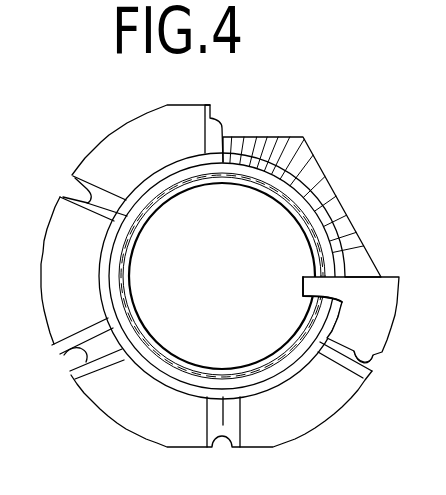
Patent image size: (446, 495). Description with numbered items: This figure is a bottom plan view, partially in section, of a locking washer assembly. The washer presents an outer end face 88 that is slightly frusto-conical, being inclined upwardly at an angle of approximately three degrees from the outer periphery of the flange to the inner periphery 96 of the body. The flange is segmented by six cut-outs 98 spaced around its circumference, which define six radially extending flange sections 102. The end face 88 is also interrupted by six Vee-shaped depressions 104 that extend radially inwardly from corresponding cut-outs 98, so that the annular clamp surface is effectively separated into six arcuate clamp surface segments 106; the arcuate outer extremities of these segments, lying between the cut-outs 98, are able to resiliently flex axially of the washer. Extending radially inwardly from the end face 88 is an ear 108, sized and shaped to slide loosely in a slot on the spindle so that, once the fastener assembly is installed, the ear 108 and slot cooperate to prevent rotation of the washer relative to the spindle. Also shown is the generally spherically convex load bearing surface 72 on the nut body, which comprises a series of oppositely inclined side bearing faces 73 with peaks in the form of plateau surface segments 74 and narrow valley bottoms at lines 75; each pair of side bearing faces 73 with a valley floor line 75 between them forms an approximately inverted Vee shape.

The load bearing surface 72 is at (323, 187).
The side bearing faces 73 is at (276, 147).
The plateau surface segments 74 is at (346, 235).
The valley floor lines 75 is at (285, 135).
The outer end face 88 is at (140, 395).
The inner periphery 96 is at (110, 308).
The cut-outs 98 is at (76, 196).
The flange sections 102 is at (137, 115).
The Vee-shaped depressions 104 is at (343, 337).
The arcuate clamp surface segments 106 is at (141, 164).
The ear 108 is at (315, 285).